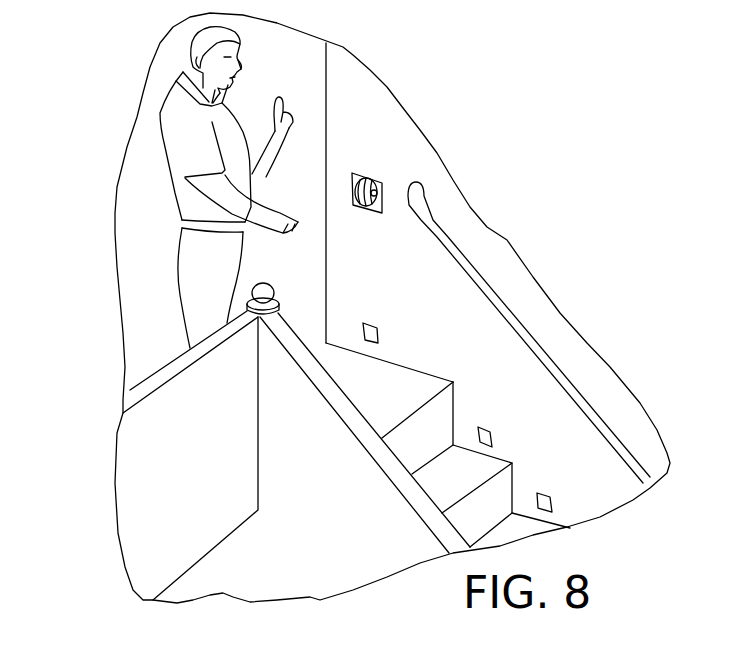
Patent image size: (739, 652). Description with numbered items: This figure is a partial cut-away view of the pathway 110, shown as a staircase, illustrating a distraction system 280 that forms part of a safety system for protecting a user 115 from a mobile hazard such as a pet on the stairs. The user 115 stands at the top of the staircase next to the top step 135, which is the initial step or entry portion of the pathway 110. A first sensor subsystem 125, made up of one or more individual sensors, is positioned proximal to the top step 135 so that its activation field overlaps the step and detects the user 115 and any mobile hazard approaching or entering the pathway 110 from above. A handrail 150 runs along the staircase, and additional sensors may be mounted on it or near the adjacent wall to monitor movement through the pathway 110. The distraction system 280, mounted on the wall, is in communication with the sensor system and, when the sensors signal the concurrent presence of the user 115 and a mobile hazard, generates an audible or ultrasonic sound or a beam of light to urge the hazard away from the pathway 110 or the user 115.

The pathway 110 is at (580, 498).
The user 115 is at (168, 121).
The first sensor subsystem 125 is at (363, 343).
The top step 135 is at (393, 390).
The handrail 150 is at (481, 280).
The distraction system 280 is at (380, 196).